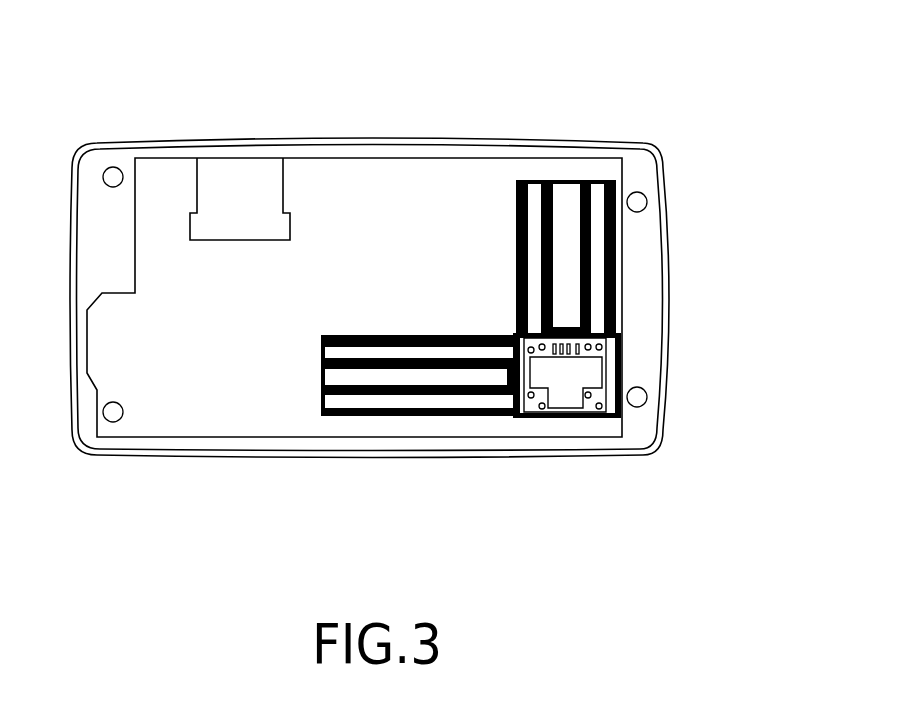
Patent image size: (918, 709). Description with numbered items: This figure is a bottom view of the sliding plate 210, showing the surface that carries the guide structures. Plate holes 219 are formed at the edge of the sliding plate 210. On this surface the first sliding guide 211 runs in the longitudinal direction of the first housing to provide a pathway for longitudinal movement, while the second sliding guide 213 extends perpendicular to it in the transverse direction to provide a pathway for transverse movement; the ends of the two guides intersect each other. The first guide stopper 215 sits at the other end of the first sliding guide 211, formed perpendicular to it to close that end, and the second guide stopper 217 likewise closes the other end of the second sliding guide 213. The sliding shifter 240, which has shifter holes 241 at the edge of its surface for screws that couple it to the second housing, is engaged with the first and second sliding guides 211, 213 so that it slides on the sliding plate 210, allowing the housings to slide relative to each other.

The sliding plate 210 is at (228, 412).
The first sliding guide 211 is at (418, 395).
The second sliding guide 213 is at (569, 280).
The first guide stopper 215 is at (321, 372).
The second guide stopper 217 is at (561, 180).
The plate holes 219 is at (640, 202).
The sliding shifter 240 is at (557, 418).
The shifter holes 241 is at (594, 409).